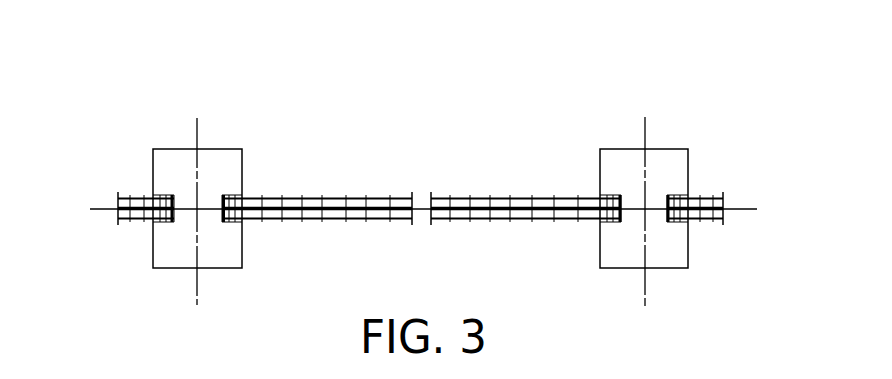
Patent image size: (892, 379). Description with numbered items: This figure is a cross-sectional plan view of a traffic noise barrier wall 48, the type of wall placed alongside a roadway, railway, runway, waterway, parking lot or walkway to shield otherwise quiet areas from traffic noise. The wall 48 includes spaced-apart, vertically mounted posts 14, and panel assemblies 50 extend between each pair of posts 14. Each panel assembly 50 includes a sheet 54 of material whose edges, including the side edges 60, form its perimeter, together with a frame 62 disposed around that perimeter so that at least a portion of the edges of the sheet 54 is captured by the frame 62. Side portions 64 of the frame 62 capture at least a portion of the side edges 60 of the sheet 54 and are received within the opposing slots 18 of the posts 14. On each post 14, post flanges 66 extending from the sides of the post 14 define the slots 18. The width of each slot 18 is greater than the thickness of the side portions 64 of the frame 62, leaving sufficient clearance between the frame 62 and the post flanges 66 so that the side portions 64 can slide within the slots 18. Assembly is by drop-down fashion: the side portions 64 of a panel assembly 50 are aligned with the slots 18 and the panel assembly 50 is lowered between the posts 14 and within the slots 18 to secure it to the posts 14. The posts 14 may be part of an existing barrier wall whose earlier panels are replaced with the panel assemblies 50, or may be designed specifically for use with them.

The post 14 is at (168, 158).
The slot 18 is at (177, 193).
The traffic noise barrier wall 48 is at (607, 58).
The panel assembly 50 is at (127, 193).
The sheet 54 is at (353, 210).
The side edge 60 is at (245, 223).
The frame 62 is at (492, 202).
The side portion 64 is at (247, 193).
The post flange 66 is at (170, 158).